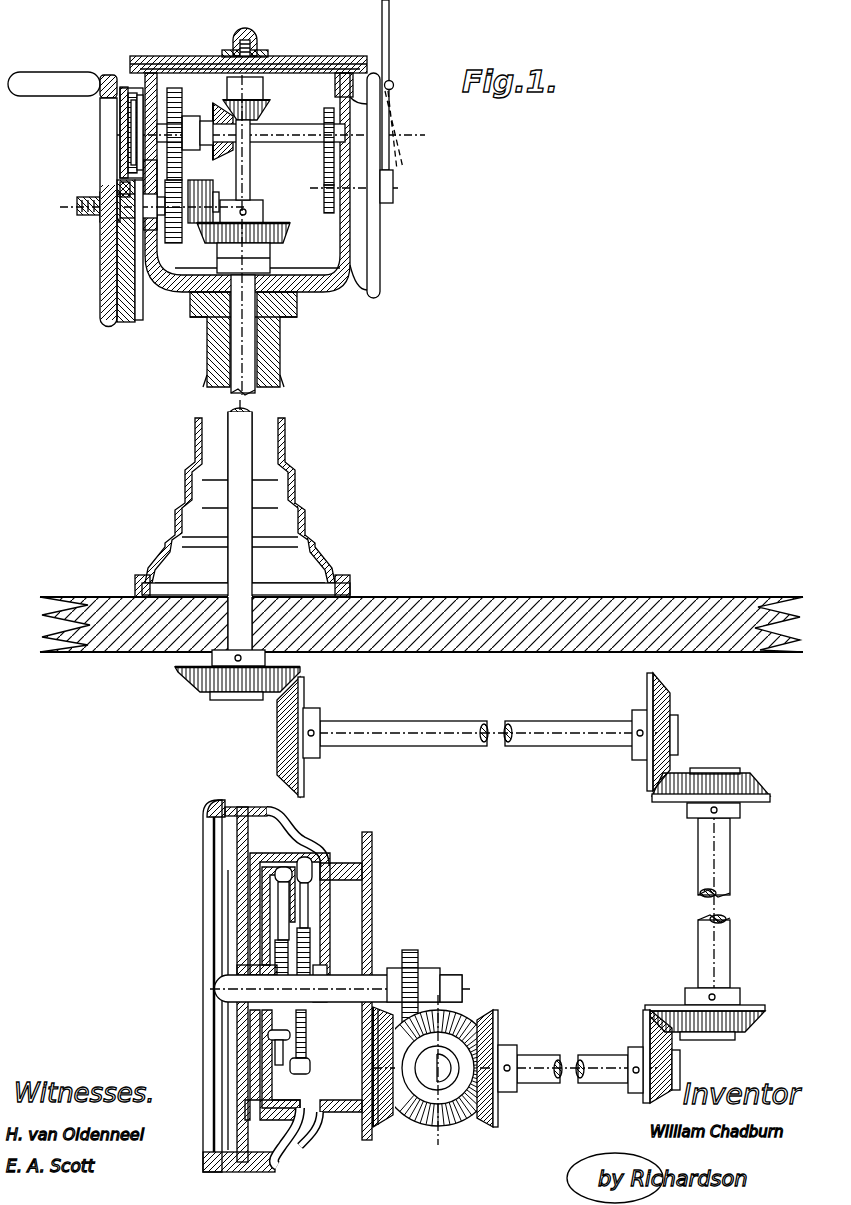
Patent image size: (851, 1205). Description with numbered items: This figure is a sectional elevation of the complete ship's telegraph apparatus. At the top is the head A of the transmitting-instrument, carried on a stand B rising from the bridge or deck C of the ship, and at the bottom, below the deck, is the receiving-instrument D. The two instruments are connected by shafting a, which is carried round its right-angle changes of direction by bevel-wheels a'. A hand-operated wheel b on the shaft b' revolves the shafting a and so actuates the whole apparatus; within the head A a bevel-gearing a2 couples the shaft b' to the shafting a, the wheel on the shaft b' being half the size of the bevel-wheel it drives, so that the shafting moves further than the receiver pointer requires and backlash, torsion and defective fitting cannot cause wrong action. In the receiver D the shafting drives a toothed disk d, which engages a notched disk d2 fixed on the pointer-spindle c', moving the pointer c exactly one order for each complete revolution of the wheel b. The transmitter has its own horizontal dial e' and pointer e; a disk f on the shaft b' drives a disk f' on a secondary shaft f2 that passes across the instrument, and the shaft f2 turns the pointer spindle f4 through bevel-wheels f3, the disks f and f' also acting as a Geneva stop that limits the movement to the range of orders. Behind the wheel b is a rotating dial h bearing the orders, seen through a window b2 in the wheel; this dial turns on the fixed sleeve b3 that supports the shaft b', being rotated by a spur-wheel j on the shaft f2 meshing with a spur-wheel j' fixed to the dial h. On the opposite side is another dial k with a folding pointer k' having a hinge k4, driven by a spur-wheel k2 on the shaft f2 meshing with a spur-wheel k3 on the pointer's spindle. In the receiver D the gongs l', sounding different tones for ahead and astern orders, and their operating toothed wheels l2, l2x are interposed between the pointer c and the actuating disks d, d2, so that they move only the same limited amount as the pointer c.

The head of the transmitting-instrument A is at (225, 219).
The stand B is at (247, 505).
The bridge or deck C is at (90, 598).
The receiving-instrument D is at (305, 1008).
The shafting a is at (469, 579).
The bevel-wheels a' is at (472, 901).
The bevel-gearing a2 is at (262, 222).
The hand-operated wheel b is at (62, 192).
The shaft b' is at (151, 223).
The window b2 is at (120, 112).
The fixed sleeve b3 is at (108, 240).
The pointer c is at (227, 986).
The pointer-spindle c' is at (340, 967).
The disk d is at (455, 1012).
The disk d2 is at (418, 962).
The pointer e is at (248, 49).
The dial e' is at (252, 47).
The disk f is at (188, 220).
The disk f' is at (190, 131).
The secondary shaft f2 is at (300, 130).
The bevel-wheels f3 is at (263, 92).
The spindle f4 is at (248, 60).
The rotating dial h is at (126, 75).
The spur-wheel j is at (97, 132).
The spur-wheel j' is at (107, 248).
The dial k is at (375, 185).
The pointer k' is at (402, 85).
The spur-wheel k2 is at (324, 150).
The spur-wheel k3 is at (324, 205).
The hinge k4 is at (394, 87).
The gongs l' is at (296, 843).
The toothed wheel l2 is at (322, 975).
The toothed wheel l2x is at (345, 965).